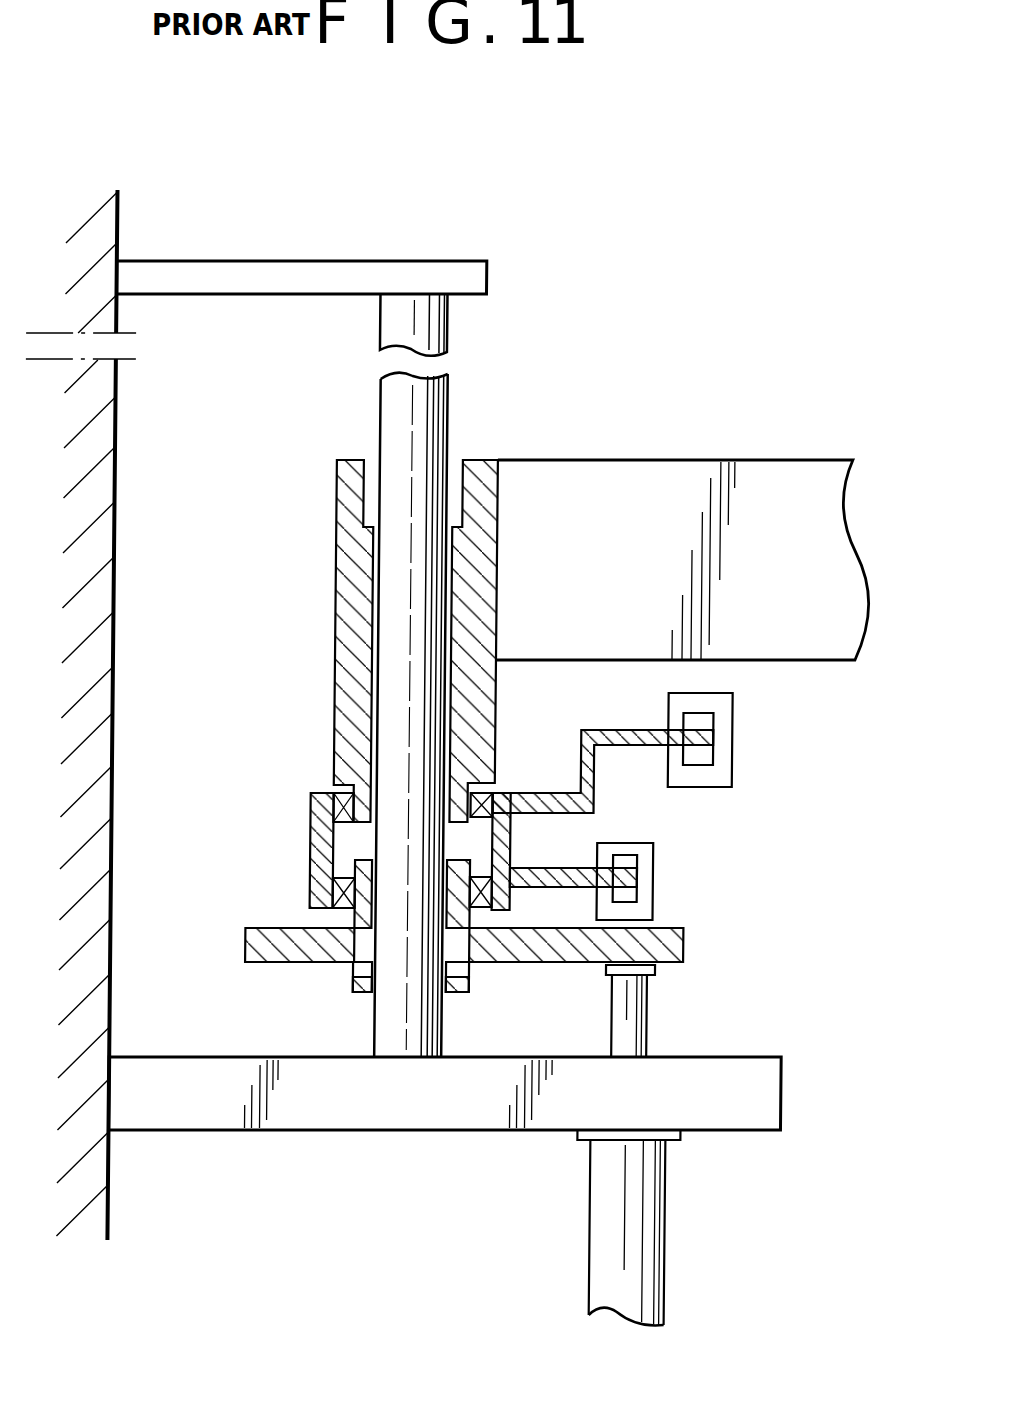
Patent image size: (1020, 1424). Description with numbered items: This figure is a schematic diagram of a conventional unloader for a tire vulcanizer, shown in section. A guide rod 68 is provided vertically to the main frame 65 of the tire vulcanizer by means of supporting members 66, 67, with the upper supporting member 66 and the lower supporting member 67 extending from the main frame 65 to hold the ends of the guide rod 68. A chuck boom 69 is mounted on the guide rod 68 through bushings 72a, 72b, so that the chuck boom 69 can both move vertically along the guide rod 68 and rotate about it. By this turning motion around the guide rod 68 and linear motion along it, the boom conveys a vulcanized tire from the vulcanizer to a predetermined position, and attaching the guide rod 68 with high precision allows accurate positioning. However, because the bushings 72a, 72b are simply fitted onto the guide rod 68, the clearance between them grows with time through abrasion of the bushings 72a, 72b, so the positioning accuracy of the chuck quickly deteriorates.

The main frame 65 is at (108, 223).
The supporting member 66 is at (316, 276).
The supporting member 67 is at (330, 1103).
The guide rod 68 is at (437, 410).
The chuck boom 69 is at (598, 486).
The bushing 72a is at (371, 510).
The bushing 72b is at (363, 981).